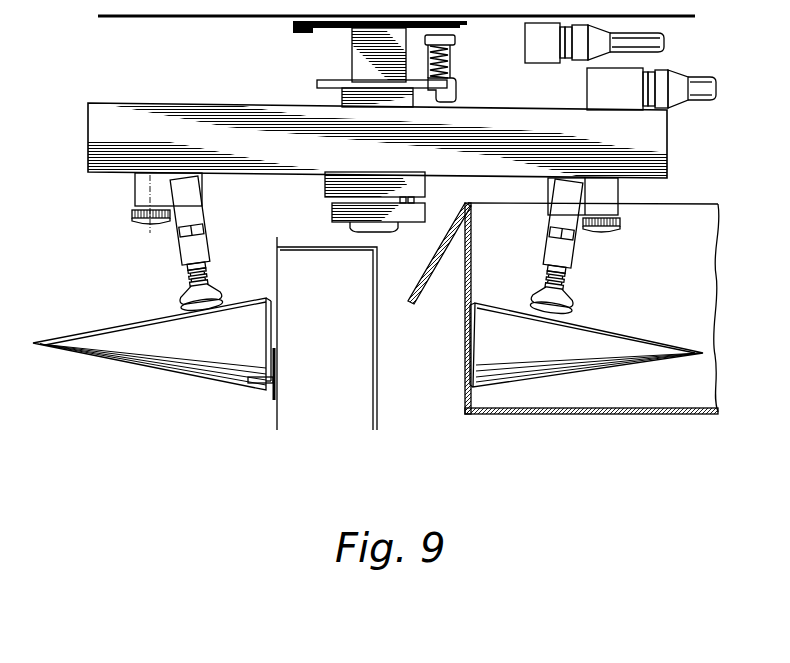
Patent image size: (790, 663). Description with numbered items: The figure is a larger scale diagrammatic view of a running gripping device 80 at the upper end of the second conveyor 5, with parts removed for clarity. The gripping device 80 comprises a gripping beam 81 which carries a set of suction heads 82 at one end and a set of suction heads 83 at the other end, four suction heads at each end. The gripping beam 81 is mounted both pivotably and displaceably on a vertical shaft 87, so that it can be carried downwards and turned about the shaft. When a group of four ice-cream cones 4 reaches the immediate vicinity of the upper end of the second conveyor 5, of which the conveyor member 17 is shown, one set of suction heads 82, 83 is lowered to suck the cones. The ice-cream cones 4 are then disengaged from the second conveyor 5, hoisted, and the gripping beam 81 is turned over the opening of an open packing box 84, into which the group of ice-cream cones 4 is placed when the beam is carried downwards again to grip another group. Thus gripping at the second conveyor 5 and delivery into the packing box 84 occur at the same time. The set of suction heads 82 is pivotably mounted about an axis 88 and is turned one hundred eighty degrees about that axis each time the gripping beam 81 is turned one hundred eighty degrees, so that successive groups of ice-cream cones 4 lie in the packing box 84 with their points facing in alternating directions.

The gripping device 80 is at (203, 100).
The vertical shaft 87 is at (352, 50).
The axis 88 is at (153, 186).
The gripping beam 81 is at (288, 147).
The suction heads 82 is at (195, 250).
The suction heads 83 is at (562, 253).
The second conveyor 5 is at (274, 268).
The conveyor member 17 is at (364, 268).
The packing box 84 is at (463, 267).
The ice-cream cones 4 is at (202, 350).